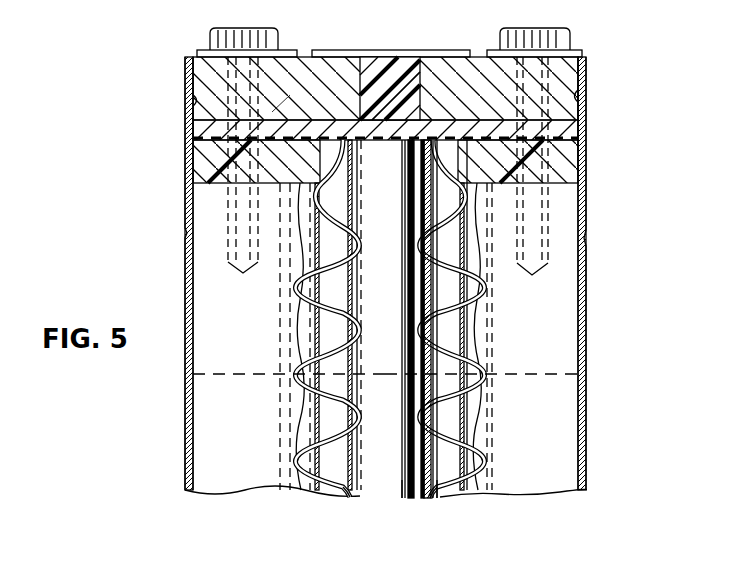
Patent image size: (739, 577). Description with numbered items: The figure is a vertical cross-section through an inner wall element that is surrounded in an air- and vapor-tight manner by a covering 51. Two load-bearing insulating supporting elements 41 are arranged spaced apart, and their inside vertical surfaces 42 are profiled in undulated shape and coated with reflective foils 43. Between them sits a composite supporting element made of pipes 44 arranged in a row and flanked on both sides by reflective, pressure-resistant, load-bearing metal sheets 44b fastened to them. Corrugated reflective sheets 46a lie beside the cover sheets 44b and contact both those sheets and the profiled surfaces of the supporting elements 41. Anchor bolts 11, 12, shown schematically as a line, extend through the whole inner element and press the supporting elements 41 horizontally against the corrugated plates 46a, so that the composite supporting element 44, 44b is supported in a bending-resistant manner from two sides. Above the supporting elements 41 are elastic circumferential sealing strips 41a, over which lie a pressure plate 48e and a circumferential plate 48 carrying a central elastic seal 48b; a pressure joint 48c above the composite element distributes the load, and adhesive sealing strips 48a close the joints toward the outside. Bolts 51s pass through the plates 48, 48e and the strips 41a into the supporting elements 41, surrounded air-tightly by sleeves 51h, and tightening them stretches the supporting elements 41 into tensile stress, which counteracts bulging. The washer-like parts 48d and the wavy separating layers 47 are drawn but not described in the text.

The anchor bolt 11 is at (240, 373).
The anchor bolt 12 is at (510, 378).
The insulating supporting element 41 is at (193, 212).
The elastic circumferential sealing strip 41a is at (212, 161).
The inside vertical surface 42 is at (490, 312).
The reflective foil 43 is at (462, 357).
The pipe 44 is at (366, 478).
The metal sheet 44b is at (343, 491).
The corrugated reflective sheet 46a is at (443, 305).
The corrugated separator 47 is at (340, 230).
The circumferential plate 48 is at (558, 82).
The adhesive sealing strip 48a is at (190, 115).
The elastic seal 48b is at (405, 67).
The pressure joint 48c is at (380, 57).
The terminal washer 48d is at (200, 52).
The pressure plate 48e is at (560, 130).
The covering 51 is at (305, 52).
The sleeve 51h is at (272, 112).
The bolt 51s is at (222, 35).